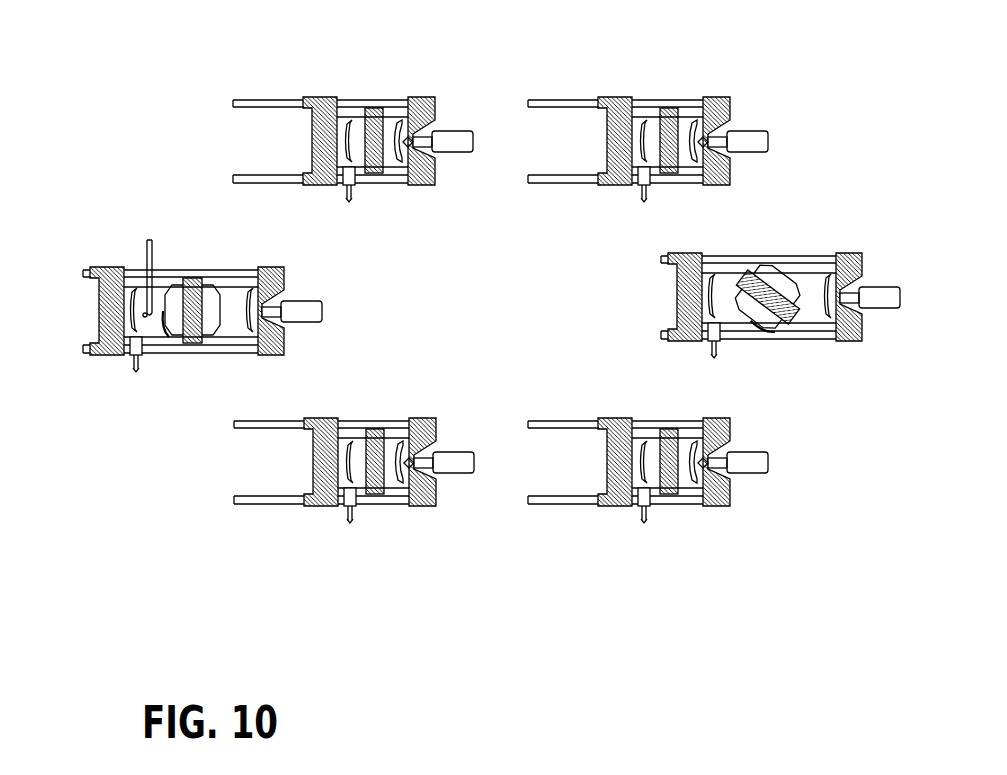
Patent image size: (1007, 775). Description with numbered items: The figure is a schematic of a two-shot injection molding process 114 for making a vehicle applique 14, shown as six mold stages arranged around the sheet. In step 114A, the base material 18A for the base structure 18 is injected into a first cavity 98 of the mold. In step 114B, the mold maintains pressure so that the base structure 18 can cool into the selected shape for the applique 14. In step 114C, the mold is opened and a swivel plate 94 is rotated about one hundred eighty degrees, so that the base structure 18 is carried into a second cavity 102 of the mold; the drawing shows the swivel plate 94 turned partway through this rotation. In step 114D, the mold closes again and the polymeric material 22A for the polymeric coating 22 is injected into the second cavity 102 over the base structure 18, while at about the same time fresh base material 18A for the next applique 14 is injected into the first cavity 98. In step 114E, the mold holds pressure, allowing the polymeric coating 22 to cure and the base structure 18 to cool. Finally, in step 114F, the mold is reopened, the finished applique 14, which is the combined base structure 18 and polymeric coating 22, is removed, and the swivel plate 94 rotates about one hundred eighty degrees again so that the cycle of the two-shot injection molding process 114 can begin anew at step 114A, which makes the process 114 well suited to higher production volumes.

The two-shot injection molding process 114 is at (804, 115).
The step 114A is at (347, 108).
The step 114B is at (705, 103).
The step 114C is at (804, 309).
The step 114D is at (674, 506).
The step 114E is at (324, 507).
The step 114F is at (176, 309).
The base structure 18 is at (389, 95).
The base material 18A is at (446, 94).
The first cavity 98 is at (706, 99).
The applique 14 is at (169, 255).
The polymeric coating 22 is at (184, 352).
The polymeric material 22A is at (320, 514).
The second cavity 102 is at (671, 512).
The swivel plate 94 is at (791, 338).